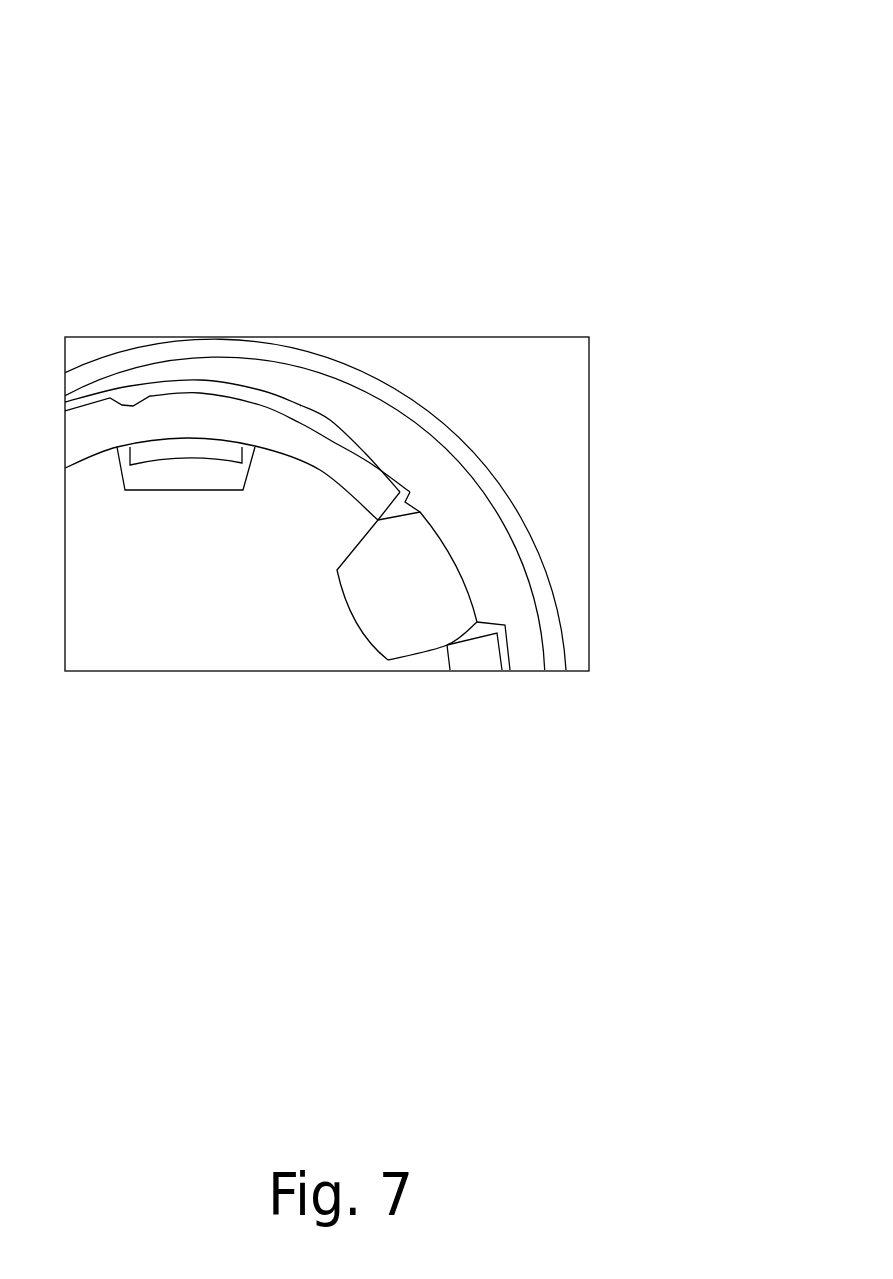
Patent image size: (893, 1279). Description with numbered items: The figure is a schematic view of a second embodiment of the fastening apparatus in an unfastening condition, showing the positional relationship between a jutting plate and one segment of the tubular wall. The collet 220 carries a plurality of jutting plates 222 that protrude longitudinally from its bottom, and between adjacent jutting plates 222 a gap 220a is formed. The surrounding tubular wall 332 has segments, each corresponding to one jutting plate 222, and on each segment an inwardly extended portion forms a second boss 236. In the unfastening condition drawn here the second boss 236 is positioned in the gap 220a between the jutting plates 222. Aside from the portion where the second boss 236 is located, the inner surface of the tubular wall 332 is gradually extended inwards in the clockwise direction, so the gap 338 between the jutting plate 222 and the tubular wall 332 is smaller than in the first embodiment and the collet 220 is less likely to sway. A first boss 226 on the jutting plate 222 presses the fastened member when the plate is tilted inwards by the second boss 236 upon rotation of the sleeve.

The collet 220 is at (286, 127).
The jutting plate 222 is at (93, 427).
The first boss 226 is at (184, 475).
The gap 338 is at (293, 422).
The tubular wall 332 is at (418, 423).
The second boss 236 is at (453, 507).
The gap 220a is at (453, 585).